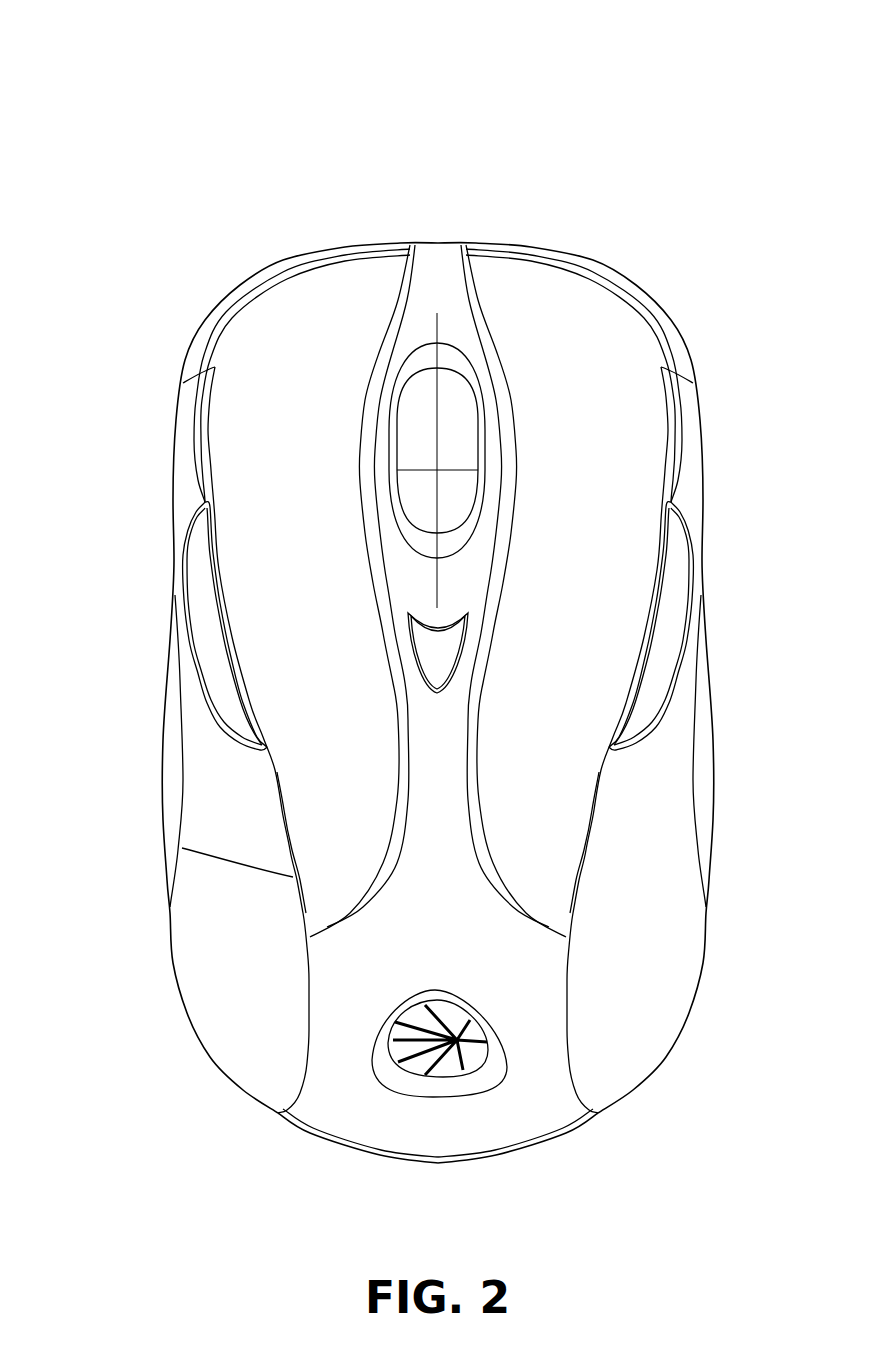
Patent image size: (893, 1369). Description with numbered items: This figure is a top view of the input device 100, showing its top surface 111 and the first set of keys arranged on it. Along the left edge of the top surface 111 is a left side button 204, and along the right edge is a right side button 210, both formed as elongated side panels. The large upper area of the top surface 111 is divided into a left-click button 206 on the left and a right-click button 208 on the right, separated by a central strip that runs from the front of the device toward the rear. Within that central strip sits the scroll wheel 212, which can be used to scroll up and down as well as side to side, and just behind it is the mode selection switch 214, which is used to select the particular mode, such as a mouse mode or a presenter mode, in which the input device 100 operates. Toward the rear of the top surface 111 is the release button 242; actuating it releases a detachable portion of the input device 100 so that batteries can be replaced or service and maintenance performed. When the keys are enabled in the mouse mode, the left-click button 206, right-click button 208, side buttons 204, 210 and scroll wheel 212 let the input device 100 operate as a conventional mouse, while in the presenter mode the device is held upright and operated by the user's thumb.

The input device 100 is at (207, 127).
The top surface 111 is at (442, 277).
The left side button 204 is at (203, 557).
The left-click button 206 is at (270, 345).
The right-click button 208 is at (558, 310).
The right side button 210 is at (677, 563).
The scroll wheel 212 is at (455, 432).
The mode selection switch 214 is at (443, 657).
The release button 242 is at (422, 1022).